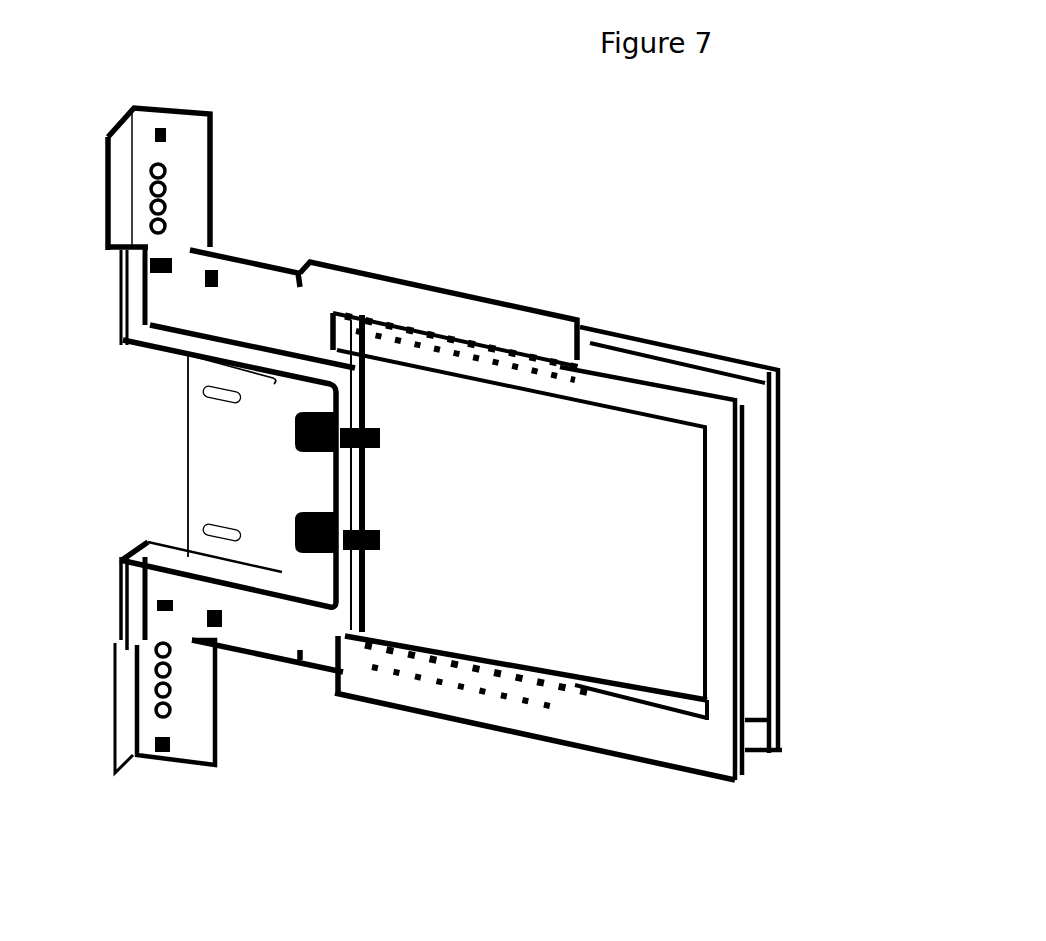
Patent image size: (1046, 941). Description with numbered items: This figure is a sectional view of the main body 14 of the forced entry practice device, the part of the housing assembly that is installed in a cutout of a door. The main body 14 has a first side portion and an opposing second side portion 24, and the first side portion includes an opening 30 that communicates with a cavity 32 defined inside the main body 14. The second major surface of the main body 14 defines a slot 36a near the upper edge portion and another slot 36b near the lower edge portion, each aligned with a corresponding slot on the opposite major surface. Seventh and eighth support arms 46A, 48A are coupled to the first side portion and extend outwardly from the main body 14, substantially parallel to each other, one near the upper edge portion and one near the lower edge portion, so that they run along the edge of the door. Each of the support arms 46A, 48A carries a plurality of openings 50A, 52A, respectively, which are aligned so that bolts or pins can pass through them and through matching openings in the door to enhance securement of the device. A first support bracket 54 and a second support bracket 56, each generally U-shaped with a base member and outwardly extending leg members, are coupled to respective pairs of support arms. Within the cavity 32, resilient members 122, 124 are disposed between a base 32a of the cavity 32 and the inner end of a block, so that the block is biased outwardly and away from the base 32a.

The main body 14 is at (290, 247).
The second side portion 24 is at (353, 485).
The opening 30 is at (188, 424).
The cavity 32 is at (235, 478).
The base of the cavity 32a is at (330, 487).
The slot 36a is at (200, 389).
The slot 36b is at (200, 530).
The seventh support arm 46A is at (190, 124).
The eighth support arm 48A is at (197, 747).
The openings 50A is at (167, 207).
The openings 52A is at (172, 672).
The first support bracket 54 is at (455, 722).
The second support bracket 56 is at (677, 340).
The resilient member 122 is at (335, 430).
The resilient member 124 is at (335, 558).